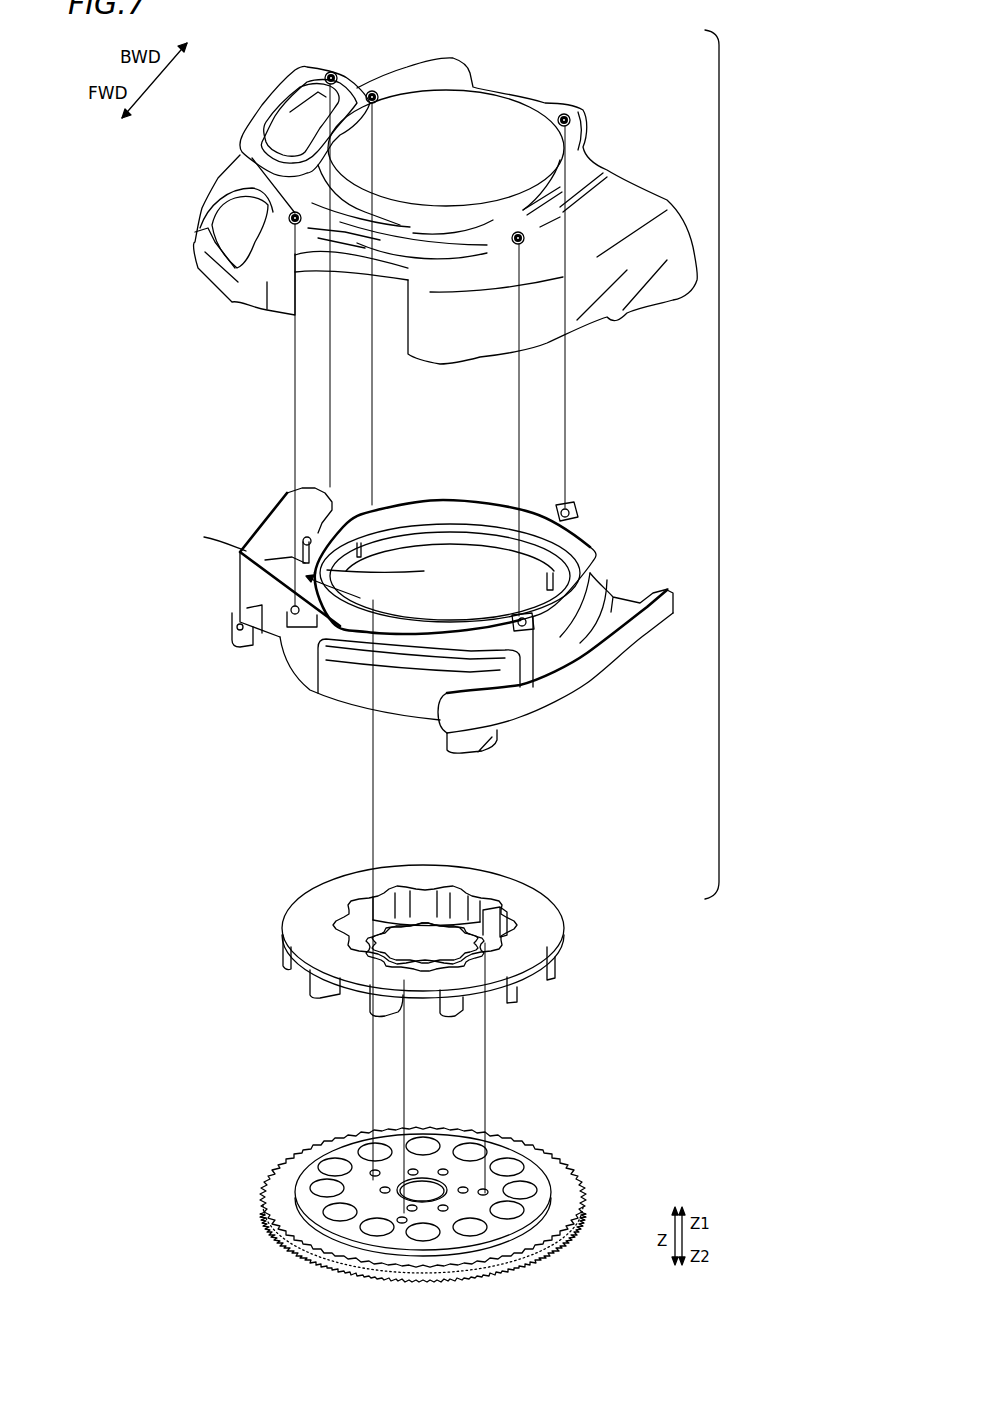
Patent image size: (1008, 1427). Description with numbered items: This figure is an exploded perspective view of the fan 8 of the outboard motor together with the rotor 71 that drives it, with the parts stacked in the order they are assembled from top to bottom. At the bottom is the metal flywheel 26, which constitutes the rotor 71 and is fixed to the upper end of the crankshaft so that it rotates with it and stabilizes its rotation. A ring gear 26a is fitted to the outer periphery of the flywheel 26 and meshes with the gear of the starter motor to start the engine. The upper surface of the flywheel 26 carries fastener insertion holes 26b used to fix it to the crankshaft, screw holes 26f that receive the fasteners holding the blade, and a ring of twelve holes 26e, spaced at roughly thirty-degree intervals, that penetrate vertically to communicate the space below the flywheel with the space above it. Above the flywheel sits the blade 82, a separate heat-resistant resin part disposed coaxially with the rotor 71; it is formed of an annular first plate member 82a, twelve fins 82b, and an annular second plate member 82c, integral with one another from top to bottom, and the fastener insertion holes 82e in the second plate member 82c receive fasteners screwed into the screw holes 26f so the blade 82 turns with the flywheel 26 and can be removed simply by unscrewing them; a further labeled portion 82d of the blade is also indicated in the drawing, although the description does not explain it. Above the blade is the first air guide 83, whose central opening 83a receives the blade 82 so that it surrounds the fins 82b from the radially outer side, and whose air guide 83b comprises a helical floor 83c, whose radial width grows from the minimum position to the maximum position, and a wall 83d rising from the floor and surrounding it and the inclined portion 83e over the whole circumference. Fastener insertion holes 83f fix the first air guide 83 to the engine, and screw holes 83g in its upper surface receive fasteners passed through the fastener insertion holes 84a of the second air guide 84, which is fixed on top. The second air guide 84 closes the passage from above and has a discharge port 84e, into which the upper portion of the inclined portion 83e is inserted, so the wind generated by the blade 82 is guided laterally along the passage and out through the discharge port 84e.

The fan 8 is at (719, 420).
The second air guide 84 is at (442, 190).
The fastener insertion holes 84a is at (373, 90).
The discharge port 84e is at (310, 75).
The first air guide 83 is at (432, 574).
The opening 83a is at (382, 541).
The air guide 83b is at (450, 511).
The floor 83c is at (434, 524).
The wall 83d is at (473, 517).
The inclined portion 83e is at (274, 506).
The fastener insertion holes 83f is at (237, 626).
The screw holes 83g is at (331, 487).
The blade 82 is at (490, 939).
The first plate member 82a is at (507, 887).
The fins 82b is at (287, 935).
The second plate member 82c is at (427, 897).
The flat plate portion 82d is at (565, 923).
The fastener insertion holes 82e is at (380, 900).
The flywheel 26 is at (450, 1195).
The rotor 71 is at (450, 1195).
The ring gear 26a is at (545, 1155).
The fastener insertion holes 26b is at (420, 1125).
The holes 26e is at (346, 1158).
The screw holes 26f is at (402, 1224).